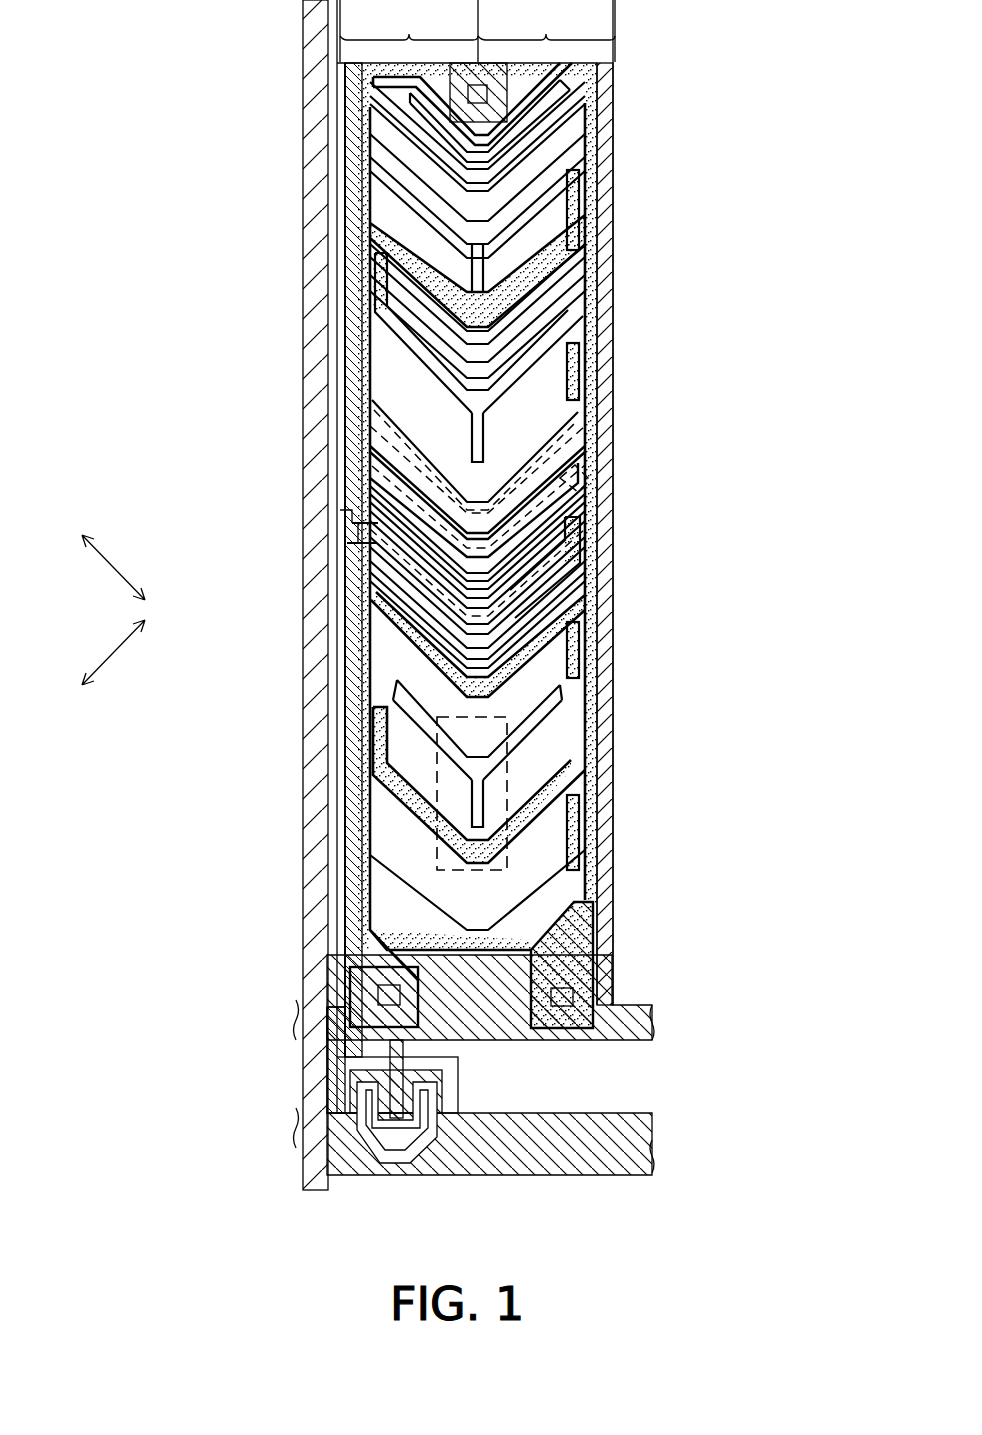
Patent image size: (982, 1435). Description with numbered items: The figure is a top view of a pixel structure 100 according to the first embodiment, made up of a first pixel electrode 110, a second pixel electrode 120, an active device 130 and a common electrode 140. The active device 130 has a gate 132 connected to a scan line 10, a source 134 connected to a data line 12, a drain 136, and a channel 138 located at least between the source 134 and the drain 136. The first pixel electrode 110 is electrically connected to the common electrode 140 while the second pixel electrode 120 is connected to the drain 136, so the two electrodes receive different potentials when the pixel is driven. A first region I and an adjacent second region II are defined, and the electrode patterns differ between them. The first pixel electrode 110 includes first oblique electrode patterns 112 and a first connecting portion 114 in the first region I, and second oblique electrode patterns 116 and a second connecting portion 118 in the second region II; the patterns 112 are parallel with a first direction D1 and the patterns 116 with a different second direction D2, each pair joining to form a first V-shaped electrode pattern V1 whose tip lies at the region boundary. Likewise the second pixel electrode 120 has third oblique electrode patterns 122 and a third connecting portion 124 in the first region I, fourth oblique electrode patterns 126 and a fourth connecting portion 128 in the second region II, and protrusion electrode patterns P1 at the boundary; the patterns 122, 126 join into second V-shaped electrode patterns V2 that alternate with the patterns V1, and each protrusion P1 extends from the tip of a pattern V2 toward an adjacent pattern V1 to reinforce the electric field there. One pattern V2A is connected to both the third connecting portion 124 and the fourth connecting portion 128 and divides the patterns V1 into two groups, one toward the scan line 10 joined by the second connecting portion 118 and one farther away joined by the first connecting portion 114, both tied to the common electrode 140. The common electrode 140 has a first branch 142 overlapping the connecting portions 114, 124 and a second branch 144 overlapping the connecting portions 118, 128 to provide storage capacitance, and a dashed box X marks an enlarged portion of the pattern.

The scan line 10 is at (303, 1146).
The data line 12 is at (327, 1073).
The pixel structure 100 is at (807, 1277).
The first pixel electrode 110 is at (100, 790).
The first oblique electrode patterns 112 is at (400, 412).
The first connecting portion 114 is at (372, 233).
The second oblique electrode patterns 116 is at (583, 430).
The second connecting portion 118 is at (583, 832).
The second pixel electrode 120 is at (100, 918).
The third oblique electrode patterns 122 is at (410, 172).
The third connecting portion 124 is at (352, 636).
The fourth oblique electrode patterns 126 is at (545, 168).
The fourth connecting portion 128 is at (583, 380).
The protrusion electrode pattern P1 is at (478, 448).
The active device 130 is at (488, 1168).
The gate 132 is at (420, 1165).
The source 134 is at (378, 1150).
The drain 136 is at (450, 1120).
The channel 138 is at (397, 1164).
The common electrode 140 is at (303, 1026).
The first branch 142 is at (348, 545).
The second branch 144 is at (600, 548).
The first V-shaped electrode pattern V1 is at (585, 487).
The second V-shaped electrode pattern V2 is at (345, 505).
The second V-shaped electrode pattern V2A is at (372, 578).
The enlarged region X is at (510, 765).
The first direction D1 is at (113, 567).
The second direction D2 is at (113, 652).
The first region I is at (409, 31).
The second region II is at (546, 31).